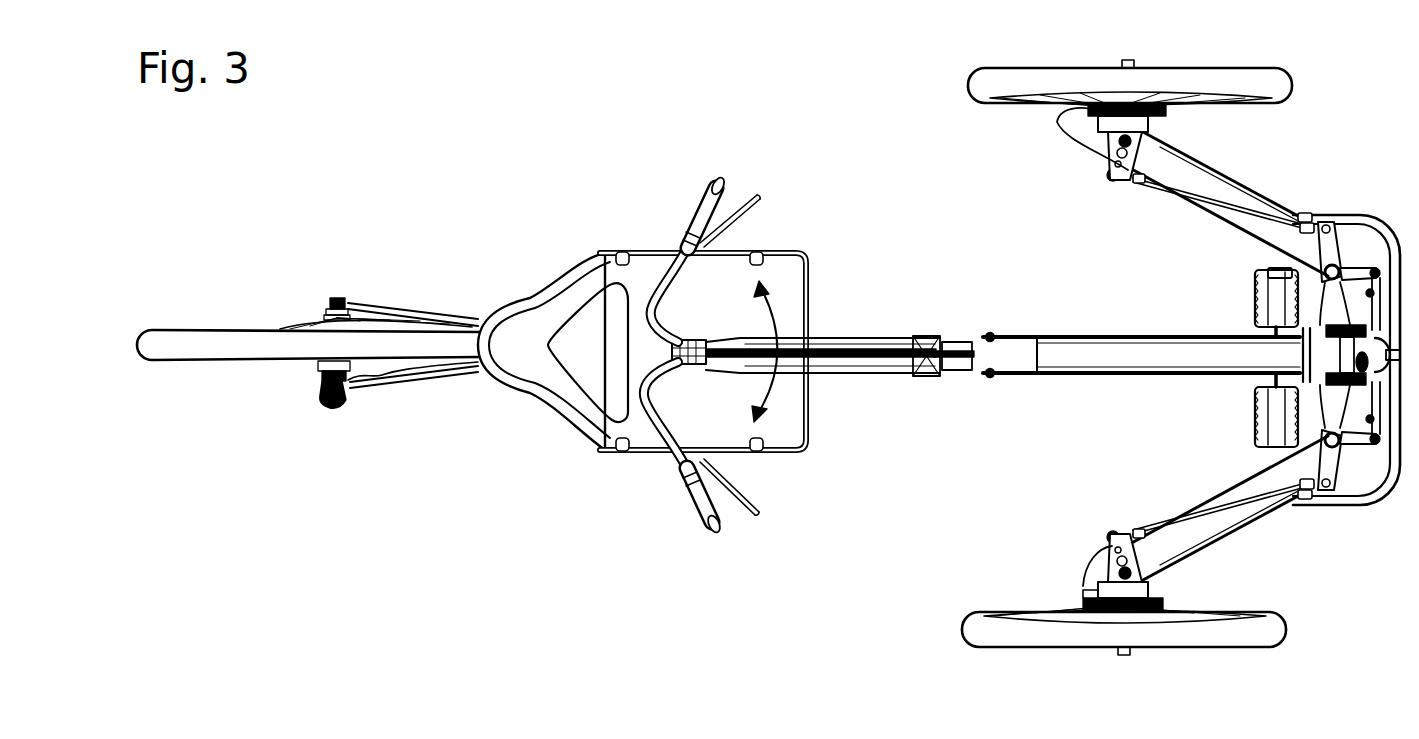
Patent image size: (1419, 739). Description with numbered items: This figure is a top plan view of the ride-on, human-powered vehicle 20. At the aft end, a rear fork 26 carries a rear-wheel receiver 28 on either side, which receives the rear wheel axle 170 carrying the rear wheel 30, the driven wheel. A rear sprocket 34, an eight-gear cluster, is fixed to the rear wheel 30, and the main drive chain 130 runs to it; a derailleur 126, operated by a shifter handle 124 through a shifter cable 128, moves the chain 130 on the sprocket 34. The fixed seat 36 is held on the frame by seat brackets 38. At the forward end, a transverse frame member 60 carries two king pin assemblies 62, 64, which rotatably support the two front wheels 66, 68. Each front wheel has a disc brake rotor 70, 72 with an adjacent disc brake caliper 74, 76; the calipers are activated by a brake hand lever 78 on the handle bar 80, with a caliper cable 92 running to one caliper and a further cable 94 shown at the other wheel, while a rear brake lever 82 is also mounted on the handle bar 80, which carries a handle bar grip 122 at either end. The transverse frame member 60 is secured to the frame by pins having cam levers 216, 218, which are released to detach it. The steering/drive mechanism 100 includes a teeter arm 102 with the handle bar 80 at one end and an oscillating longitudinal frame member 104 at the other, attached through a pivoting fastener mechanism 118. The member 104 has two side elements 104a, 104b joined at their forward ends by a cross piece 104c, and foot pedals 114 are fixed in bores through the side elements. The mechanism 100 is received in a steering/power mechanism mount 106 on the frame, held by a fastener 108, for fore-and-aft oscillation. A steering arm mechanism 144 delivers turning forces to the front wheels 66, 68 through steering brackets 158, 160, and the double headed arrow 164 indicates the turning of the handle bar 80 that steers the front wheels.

The human-powered vehicle 20 is at (820, 597).
The rear fork 26 is at (405, 394).
The rear-wheel receiver 28 is at (332, 300).
The rear wheel 30 is at (197, 330).
The rear sprocket 34 is at (325, 383).
The fixed seat 36 is at (758, 443).
The seat brackets 38 is at (699, 314).
The transverse frame member 60 is at (1225, 175).
The king pin assembly 62 is at (1176, 565).
The king pin assembly 64 is at (1132, 139).
The front wheel 66 is at (1210, 647).
The front wheel 68 is at (1216, 69).
The disc brake rotor 70 is at (1168, 601).
The disc brake rotor 72 is at (1158, 100).
The disc brake caliper 74 is at (1080, 598).
The disc brake caliper 76 is at (1100, 100).
The brake hand lever 78 is at (756, 201).
The handle bar 80 is at (668, 249).
The rear brake lever 82 is at (756, 498).
The caliper cable 92 is at (1057, 121).
The brake cable 94 is at (1082, 584).
The steering/drive mechanism 100 is at (885, 262).
The teeter arm 102 is at (886, 373).
The oscillating longitudinal frame member 104 is at (1173, 376).
The side element 104a is at (1080, 374).
The side element 104b is at (1109, 315).
The cross piece 104c is at (1263, 360).
The steering/power mechanism mount 106 is at (976, 435).
The fastener 108 is at (920, 337).
The foot pedal 114 is at (1255, 315).
The pivoting fastener mechanism 118 is at (988, 334).
The handle bar grip 122 is at (700, 518).
The shifter handle 124 is at (678, 484).
The derailleur 126 is at (334, 406).
The shifter cable 128 is at (388, 388).
The main drive chain 130 is at (432, 370).
The steering arm mechanism 144 is at (1371, 255).
The steering bracket 158 is at (1105, 552).
The steering bracket 160 is at (1108, 171).
The double headed arrow 164 is at (798, 306).
The rear wheel axle 170 is at (328, 313).
The cam lever 216 is at (1367, 497).
The cam lever 218 is at (1274, 278).